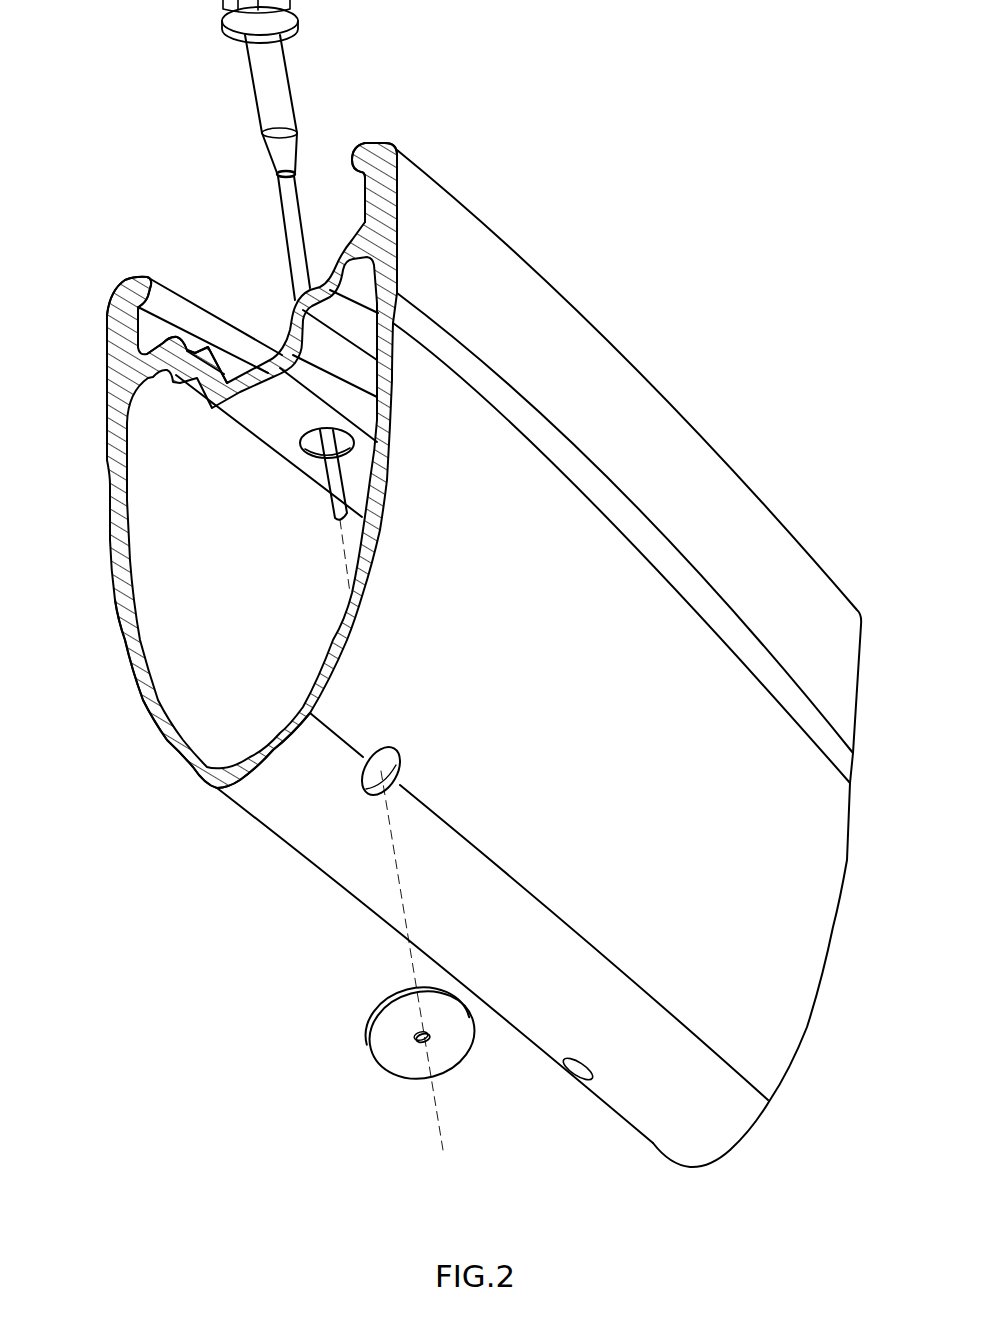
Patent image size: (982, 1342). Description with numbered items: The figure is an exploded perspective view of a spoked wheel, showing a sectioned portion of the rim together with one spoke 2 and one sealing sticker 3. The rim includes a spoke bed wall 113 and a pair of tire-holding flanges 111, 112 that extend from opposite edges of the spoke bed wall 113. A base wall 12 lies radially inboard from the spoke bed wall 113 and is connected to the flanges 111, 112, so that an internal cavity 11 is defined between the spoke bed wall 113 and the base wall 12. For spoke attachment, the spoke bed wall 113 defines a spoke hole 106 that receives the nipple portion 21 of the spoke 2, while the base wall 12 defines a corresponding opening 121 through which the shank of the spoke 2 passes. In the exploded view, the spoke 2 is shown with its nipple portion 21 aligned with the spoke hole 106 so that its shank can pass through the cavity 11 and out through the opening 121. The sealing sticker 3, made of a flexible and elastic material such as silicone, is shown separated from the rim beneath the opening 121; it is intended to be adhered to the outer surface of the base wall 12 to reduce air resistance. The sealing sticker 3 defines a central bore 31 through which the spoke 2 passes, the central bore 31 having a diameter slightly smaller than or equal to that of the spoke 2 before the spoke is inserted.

The internal cavity 11 is at (200, 660).
The tire-holding flange 111 is at (113, 340).
The tire-holding flange 112 is at (385, 207).
The spoke bed wall 113 is at (253, 383).
The base wall 12 is at (190, 757).
The spoke hole 106 is at (310, 450).
The opening 121 is at (374, 786).
The spoke 2 is at (287, 200).
The nipple portion 21 is at (278, 92).
The sealing sticker 3 is at (388, 1048).
The central bore 31 is at (422, 1045).